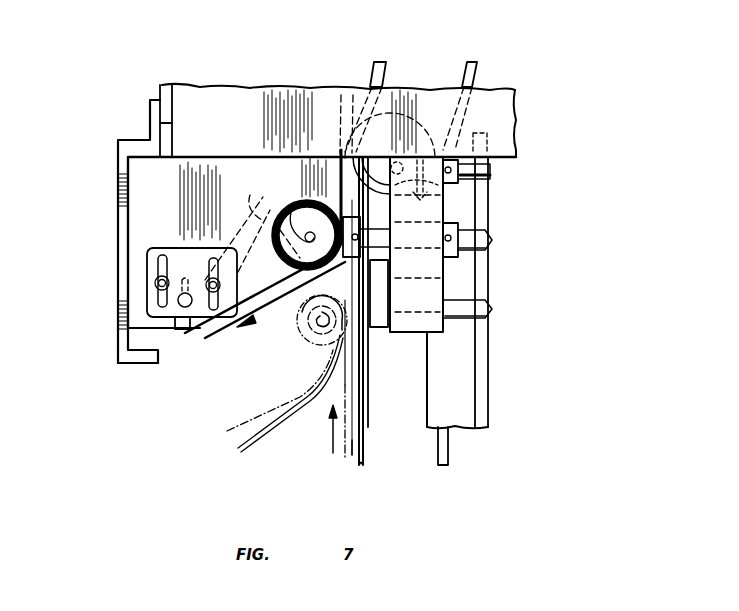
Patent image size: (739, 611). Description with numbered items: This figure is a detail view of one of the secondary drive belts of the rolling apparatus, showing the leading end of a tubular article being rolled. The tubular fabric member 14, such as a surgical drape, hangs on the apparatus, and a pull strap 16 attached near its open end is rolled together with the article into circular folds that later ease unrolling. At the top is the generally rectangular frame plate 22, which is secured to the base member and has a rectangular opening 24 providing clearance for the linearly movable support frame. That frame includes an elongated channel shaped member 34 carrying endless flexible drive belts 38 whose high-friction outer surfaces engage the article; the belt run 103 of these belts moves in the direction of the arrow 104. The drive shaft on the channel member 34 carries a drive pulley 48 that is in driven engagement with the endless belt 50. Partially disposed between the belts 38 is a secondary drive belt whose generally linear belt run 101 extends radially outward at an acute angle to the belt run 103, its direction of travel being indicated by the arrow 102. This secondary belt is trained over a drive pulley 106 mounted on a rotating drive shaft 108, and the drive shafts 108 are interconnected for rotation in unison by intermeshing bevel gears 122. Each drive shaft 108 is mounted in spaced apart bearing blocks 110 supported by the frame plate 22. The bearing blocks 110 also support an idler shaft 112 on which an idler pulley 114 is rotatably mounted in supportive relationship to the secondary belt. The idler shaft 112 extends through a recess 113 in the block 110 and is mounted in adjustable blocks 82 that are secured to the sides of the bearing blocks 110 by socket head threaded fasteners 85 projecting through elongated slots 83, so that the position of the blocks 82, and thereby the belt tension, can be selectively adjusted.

The frame plate 22 is at (232, 93).
The rectangular opening 24 is at (345, 86).
The endless belt 50 is at (387, 73).
The drive pulley 48 is at (424, 130).
The intermeshing bevel gears 122 is at (338, 152).
The bearing blocks 110 is at (143, 182).
The drive pulleys 106 is at (262, 197).
The drive shafts 108 is at (278, 191).
The threaded fasteners 85 is at (161, 256).
The adjustable blocks 82 is at (147, 250).
The elongated slots 83 is at (160, 303).
The idler shafts 112 is at (176, 330).
The recesses 113 is at (185, 307).
The idler pulleys 114 is at (177, 333).
The linear belt run 101 is at (278, 320).
The arrow 102 is at (288, 307).
The endless flexible drive belts 38 is at (352, 387).
The channel shaped member 34 is at (427, 372).
The pull straps 16 is at (222, 435).
The arrow 104 is at (333, 442).
The tubular fabric member 14 is at (364, 410).
The belt run 103 is at (345, 455).